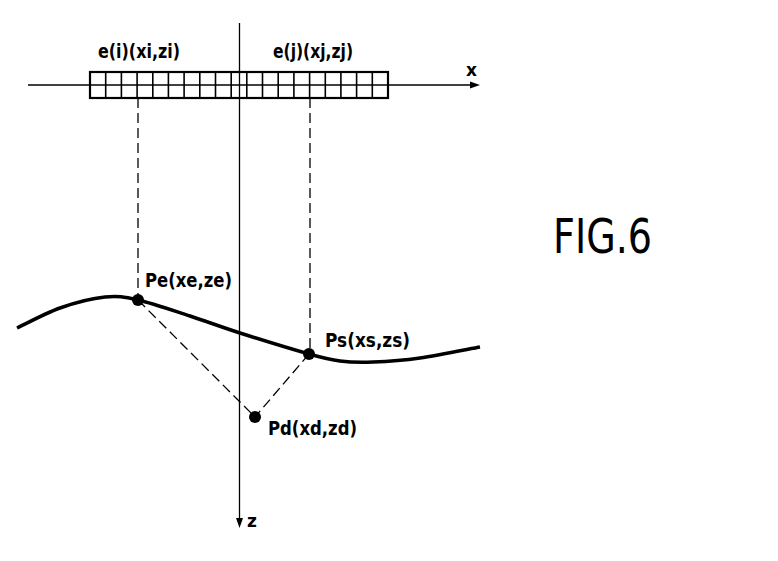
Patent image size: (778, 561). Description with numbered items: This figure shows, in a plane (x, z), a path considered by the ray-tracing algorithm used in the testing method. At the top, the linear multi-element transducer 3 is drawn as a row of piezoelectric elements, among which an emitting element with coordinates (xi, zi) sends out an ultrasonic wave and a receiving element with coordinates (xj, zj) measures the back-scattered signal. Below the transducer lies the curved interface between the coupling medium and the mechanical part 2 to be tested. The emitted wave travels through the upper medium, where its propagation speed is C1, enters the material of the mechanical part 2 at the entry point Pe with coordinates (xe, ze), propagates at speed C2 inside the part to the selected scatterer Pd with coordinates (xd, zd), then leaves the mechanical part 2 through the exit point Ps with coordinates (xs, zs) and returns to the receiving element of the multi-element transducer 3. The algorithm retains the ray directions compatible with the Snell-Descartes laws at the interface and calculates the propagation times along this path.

The mechanical part 2 is at (456, 409).
The multi-element transducer 3 is at (383, 73).
The propagation speed in the medium separating the transducer from the part C1 is at (61, 229).
The propagation speed in the material of the mechanical part C2 is at (61, 448).